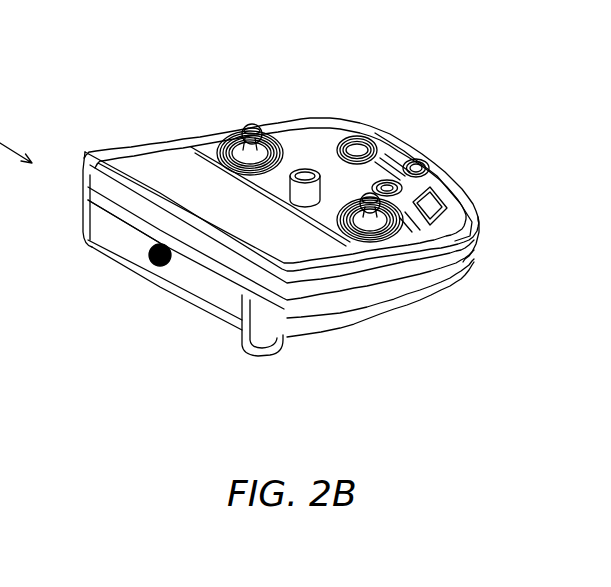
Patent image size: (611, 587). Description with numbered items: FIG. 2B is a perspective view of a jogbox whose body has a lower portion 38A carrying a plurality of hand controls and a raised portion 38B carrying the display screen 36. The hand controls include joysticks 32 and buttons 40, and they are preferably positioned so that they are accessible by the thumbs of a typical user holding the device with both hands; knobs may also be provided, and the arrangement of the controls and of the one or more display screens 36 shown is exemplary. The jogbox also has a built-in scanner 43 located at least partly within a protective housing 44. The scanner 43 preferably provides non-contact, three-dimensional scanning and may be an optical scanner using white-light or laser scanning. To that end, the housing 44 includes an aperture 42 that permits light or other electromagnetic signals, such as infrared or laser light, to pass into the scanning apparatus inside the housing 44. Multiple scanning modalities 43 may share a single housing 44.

The joysticks 32 is at (257, 124).
The display screen 36 is at (187, 172).
The lower portion 38A is at (307, 345).
The raised portion 38B is at (469, 164).
The buttons 40 is at (321, 118).
The aperture 42 is at (152, 268).
The scanner 43 is at (160, 255).
The housing 44 is at (385, 323).